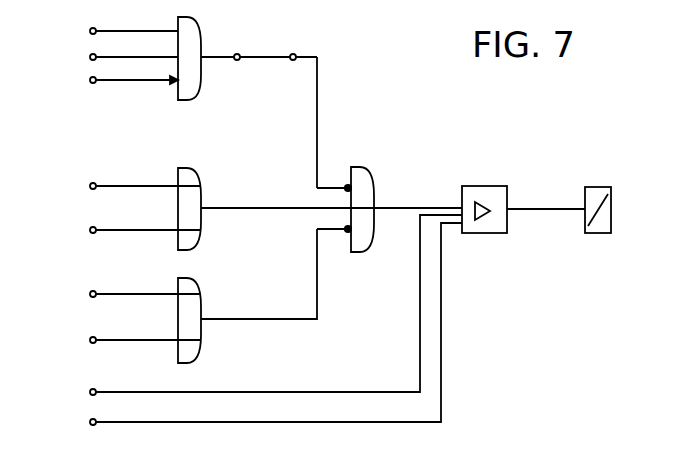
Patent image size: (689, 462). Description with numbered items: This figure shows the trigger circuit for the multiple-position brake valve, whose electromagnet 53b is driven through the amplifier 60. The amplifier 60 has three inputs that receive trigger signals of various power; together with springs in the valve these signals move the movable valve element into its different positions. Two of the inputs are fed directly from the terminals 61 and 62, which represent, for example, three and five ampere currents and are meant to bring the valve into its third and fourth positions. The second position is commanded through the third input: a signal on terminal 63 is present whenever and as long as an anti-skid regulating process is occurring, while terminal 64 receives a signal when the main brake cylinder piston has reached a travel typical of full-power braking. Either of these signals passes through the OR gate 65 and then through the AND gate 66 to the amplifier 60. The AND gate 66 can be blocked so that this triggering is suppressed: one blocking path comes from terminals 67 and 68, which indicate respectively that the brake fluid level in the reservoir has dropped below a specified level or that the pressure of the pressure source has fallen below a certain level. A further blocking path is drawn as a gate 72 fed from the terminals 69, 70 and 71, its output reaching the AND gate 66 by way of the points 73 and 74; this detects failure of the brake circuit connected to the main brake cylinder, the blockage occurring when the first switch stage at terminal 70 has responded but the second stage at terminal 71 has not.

The electromagnet of the valve 53b is at (608, 197).
The amplifier 60 is at (500, 200).
The terminal 61 is at (260, 310).
The terminal 62 is at (260, 329).
The terminal 63 is at (129, 186).
The terminal 64 is at (129, 230).
The OR gate 65 is at (194, 201).
The AND gate 66 is at (365, 198).
The terminal 67 is at (129, 294).
The terminal 68 is at (129, 339).
The input terminal 69 is at (118, 26).
The terminal 70 is at (118, 52).
The terminal 71 is at (118, 79).
The NOR gate 72 is at (193, 37).
The terminal 73 is at (241, 73).
The terminal 74 is at (297, 73).